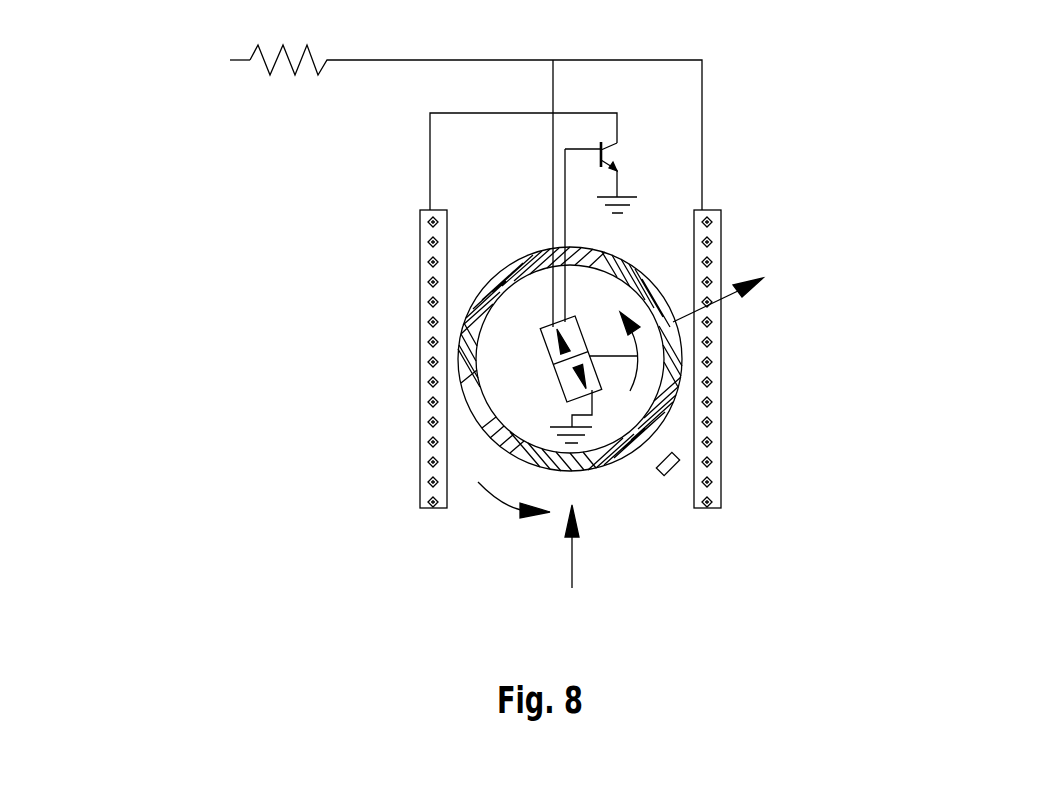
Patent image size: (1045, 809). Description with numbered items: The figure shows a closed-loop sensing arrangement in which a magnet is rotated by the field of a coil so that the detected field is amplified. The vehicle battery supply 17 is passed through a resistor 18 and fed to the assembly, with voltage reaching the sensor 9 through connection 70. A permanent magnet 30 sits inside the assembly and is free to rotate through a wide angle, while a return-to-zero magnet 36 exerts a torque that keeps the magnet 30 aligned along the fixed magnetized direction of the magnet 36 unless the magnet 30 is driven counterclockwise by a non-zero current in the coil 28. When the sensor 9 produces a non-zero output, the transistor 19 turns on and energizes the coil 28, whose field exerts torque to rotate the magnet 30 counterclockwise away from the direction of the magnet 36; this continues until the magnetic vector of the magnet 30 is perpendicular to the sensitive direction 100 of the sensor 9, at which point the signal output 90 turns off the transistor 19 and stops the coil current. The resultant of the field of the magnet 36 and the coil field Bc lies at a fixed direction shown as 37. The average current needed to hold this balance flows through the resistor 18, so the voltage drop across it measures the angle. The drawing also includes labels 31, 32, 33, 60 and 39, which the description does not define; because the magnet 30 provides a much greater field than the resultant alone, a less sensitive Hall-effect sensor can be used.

The vehicle battery supply 17 is at (178, 53).
The resistor 18 is at (293, 73).
The transistor 19 is at (623, 153).
The connection 70 is at (553, 90).
The signal output 90 is at (565, 186).
The coil 28 is at (427, 294).
The magnet 30 is at (613, 460).
The north pole of stator ring 31 is at (678, 330).
The rotor rotation direction 32 is at (635, 370).
The sensor 9 is at (548, 352).
The sensitive direction 100 is at (567, 373).
The ground connection 60 is at (574, 447).
The return-to-zero magnet 36 is at (660, 474).
The field direction arrow 33 is at (500, 500).
The resultant field direction 37 is at (567, 527).
The air gap region 39 is at (279, 437).